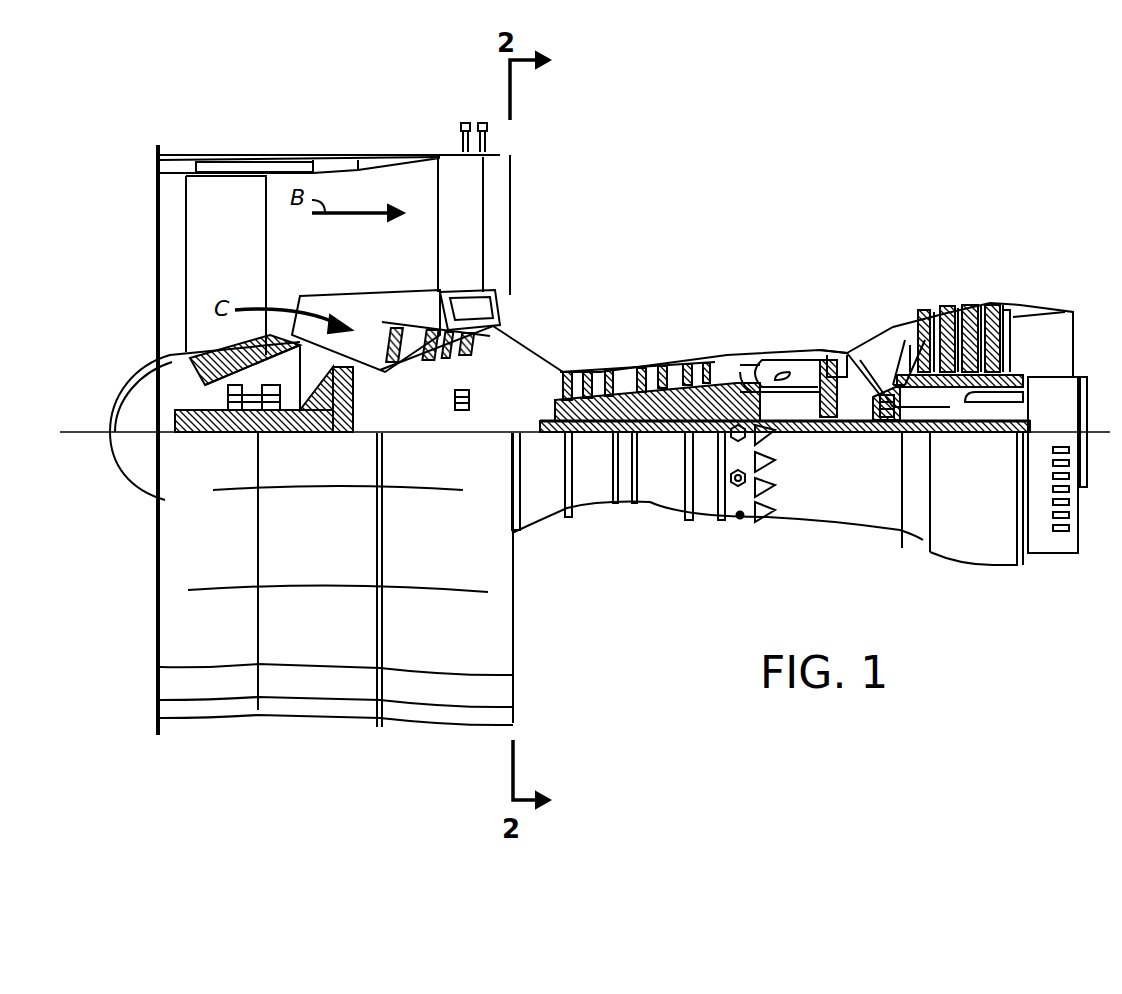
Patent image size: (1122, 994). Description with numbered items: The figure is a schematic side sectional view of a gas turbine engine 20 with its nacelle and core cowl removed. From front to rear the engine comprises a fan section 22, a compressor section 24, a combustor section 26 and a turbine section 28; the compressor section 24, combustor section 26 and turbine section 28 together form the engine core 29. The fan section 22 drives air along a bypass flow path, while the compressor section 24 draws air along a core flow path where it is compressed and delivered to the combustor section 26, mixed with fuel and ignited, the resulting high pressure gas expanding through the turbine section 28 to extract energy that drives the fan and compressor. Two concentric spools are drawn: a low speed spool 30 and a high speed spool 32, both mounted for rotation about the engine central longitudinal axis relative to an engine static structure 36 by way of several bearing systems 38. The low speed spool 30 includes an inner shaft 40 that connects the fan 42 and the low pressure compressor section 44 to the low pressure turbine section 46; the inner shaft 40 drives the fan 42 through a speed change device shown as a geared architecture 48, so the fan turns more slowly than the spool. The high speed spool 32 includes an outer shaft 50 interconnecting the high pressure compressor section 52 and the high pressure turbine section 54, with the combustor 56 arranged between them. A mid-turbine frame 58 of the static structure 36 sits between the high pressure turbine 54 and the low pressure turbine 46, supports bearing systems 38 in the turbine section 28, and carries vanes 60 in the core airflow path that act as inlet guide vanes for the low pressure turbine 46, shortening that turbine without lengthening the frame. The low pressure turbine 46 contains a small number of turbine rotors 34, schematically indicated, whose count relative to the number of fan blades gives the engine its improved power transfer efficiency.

The gas turbine engine 20 is at (930, 160).
The fan section 22 is at (355, 120).
The compressor section 24 is at (765, 245).
The combustor section 26 is at (817, 245).
The turbine section 28 is at (1033, 245).
The engine core 29 is at (1033, 197).
The low speed spool 30 is at (660, 440).
The high speed spool 32 is at (688, 385).
The turbine rotors 34 is at (975, 412).
The engine static structure 36 is at (708, 530).
The bearing systems 38 is at (232, 432).
The inner shaft 40 is at (530, 432).
The fan 42 is at (275, 338).
The low pressure compressor section 44 is at (455, 330).
The low pressure turbine section 46 is at (945, 330).
The geared architecture 48 is at (338, 432).
The outer shaft 50 is at (778, 425).
The high pressure compressor section 52 is at (612, 375).
The high pressure turbine section 54 is at (840, 357).
The combustor 56 is at (772, 378).
The mid-turbine frame 58 is at (880, 338).
The vanes 60 is at (880, 372).